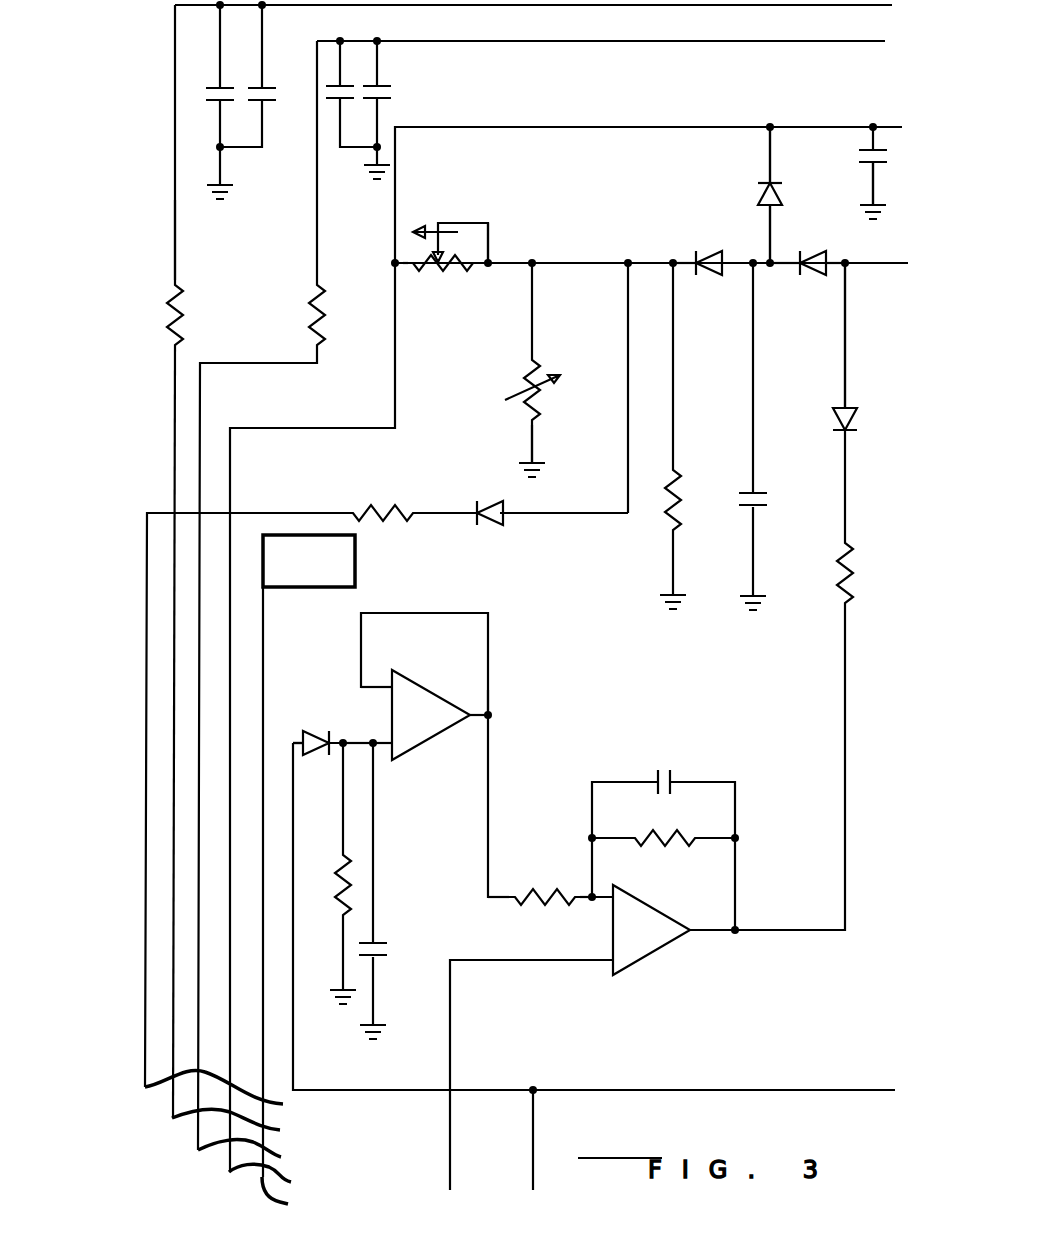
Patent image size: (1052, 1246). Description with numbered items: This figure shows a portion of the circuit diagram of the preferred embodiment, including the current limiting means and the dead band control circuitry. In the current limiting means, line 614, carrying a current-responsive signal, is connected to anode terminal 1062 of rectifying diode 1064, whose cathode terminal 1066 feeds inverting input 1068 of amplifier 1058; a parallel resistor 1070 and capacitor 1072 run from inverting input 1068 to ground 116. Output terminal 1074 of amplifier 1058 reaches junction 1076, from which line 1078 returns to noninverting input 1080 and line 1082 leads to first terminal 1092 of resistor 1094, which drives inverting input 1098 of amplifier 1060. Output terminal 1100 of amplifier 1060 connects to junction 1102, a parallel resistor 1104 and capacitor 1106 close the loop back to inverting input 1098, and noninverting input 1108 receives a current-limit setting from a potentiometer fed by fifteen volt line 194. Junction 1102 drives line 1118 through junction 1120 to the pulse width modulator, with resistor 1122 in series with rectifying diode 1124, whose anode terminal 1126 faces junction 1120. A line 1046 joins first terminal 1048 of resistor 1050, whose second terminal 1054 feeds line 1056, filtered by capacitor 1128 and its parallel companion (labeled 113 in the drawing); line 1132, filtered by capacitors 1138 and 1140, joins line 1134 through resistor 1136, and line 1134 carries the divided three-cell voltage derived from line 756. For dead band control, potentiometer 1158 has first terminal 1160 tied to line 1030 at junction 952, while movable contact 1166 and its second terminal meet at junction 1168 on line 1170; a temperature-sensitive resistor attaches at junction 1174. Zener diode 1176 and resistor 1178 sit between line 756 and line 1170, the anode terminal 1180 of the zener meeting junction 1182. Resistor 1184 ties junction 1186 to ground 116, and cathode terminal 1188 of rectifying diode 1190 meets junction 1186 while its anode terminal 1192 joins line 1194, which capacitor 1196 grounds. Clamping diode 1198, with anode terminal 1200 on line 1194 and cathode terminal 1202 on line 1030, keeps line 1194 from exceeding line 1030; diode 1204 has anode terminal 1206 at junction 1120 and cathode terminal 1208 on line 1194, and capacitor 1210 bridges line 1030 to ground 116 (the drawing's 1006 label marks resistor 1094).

The ground 116 is at (228, 185).
The capacitor 113 is at (268, 99).
The 15 volt line 194 is at (355, 562).
The line 614 is at (295, 835).
The line 756 is at (255, 510).
The junction 952 is at (395, 263).
The resistor 1006 is at (570, 905).
The line 1030 is at (780, 129).
The line 1046 is at (170, 405).
The first terminal 1048 is at (195, 370).
The resistor 1050 is at (182, 308).
The second terminal 1054 is at (178, 265).
The line 1056 is at (175, 125).
The amplifier 1058 is at (428, 692).
The amplifier 1060 is at (650, 916).
The anode terminal 1062 is at (291, 740).
The rectifying diode 1064 is at (315, 737).
The cathode terminal 1066 is at (340, 734).
The inverting input 1068 is at (378, 748).
The resistor 1070 is at (351, 860).
The capacitor 1072 is at (375, 943).
The output terminal 1074 is at (485, 707).
The junction 1076 is at (490, 715).
The line 1078 is at (455, 613).
The noninverting input 1080 is at (378, 687).
The line 1082 is at (488, 815).
The first terminal 1092 is at (503, 891).
The resistor 1094 is at (537, 895).
The inverting input 1098 is at (595, 893).
The output terminal 1100 is at (708, 932).
The junction 1102 is at (744, 937).
The resistor 1104 is at (657, 835).
The capacitor 1106 is at (680, 768).
The noninverting input 1108 is at (525, 967).
The line 1118 is at (880, 270).
The junction 1120 is at (860, 263).
The resistor 1122 is at (853, 560).
The rectifying diode 1124 is at (858, 420).
The anode terminal 1126 is at (845, 388).
The capacitor 1128 is at (217, 86).
The line 1132 is at (400, 40).
The line 1134 is at (235, 363).
The resistor 1136 is at (322, 327).
The capacitor 1138 is at (330, 77).
The capacitor 1140 is at (387, 85).
The potentiometer 1158 is at (470, 333).
The first terminal 1160 is at (405, 270).
The movable contact 1166 is at (445, 223).
The junction 1168 is at (493, 267).
The line 1170 is at (570, 260).
The junction 1174 is at (531, 261).
The zener diode 1176 is at (483, 495).
The resistor 1178 is at (387, 508).
The anode terminal 1180 is at (505, 523).
The junction 1182 is at (627, 261).
The resistor 1184 is at (675, 475).
The junction 1186 is at (663, 242).
The cathode terminal 1188 is at (675, 261).
The rectifying diode 1190 is at (712, 270).
The anode terminal 1192 is at (730, 275).
The line 1194 is at (760, 183).
The capacitor 1196 is at (760, 495).
The clamping diode 1198 is at (777, 185).
The anode terminal 1200 is at (775, 239).
The cathode terminal 1202 is at (778, 165).
The diode 1204 is at (812, 265).
The anode terminal 1206 is at (832, 260).
The cathode terminal 1208 is at (783, 264).
The capacitor 1210 is at (870, 141).